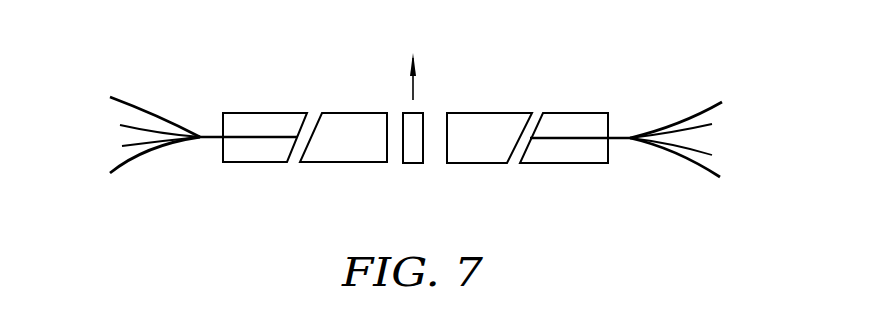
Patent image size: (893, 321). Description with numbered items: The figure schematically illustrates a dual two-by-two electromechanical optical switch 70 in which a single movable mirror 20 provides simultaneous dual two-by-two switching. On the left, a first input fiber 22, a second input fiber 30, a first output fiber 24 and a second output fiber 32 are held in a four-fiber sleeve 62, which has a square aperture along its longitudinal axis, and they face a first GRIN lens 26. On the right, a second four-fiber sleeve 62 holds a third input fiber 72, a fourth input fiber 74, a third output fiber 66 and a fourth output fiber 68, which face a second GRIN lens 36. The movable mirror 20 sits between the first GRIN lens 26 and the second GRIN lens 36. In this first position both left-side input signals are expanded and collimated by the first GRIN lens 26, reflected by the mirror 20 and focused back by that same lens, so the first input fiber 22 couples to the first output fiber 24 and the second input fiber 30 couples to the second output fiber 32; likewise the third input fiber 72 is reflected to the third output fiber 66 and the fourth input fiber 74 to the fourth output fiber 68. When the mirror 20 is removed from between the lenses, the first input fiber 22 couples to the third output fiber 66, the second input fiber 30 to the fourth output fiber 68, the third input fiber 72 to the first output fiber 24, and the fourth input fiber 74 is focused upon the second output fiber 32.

The mirror 20 is at (388, 164).
The first input fiber 22 is at (155, 100).
The first output fiber 24 is at (122, 126).
The first GRIN lens 26 is at (322, 161).
The second input fiber 30 is at (129, 140).
The second output fiber 32 is at (155, 171).
The second GRIN lens 36 is at (489, 164).
The four-fiber sleeve 62 is at (415, 142).
The third output fiber 66 is at (675, 171).
The fourth output fiber 68 is at (703, 119).
The dual 2×2 electromechanical optical switch 70 is at (580, 50).
The third input fiber 72 is at (676, 106).
The fourth input fiber 74 is at (701, 162).